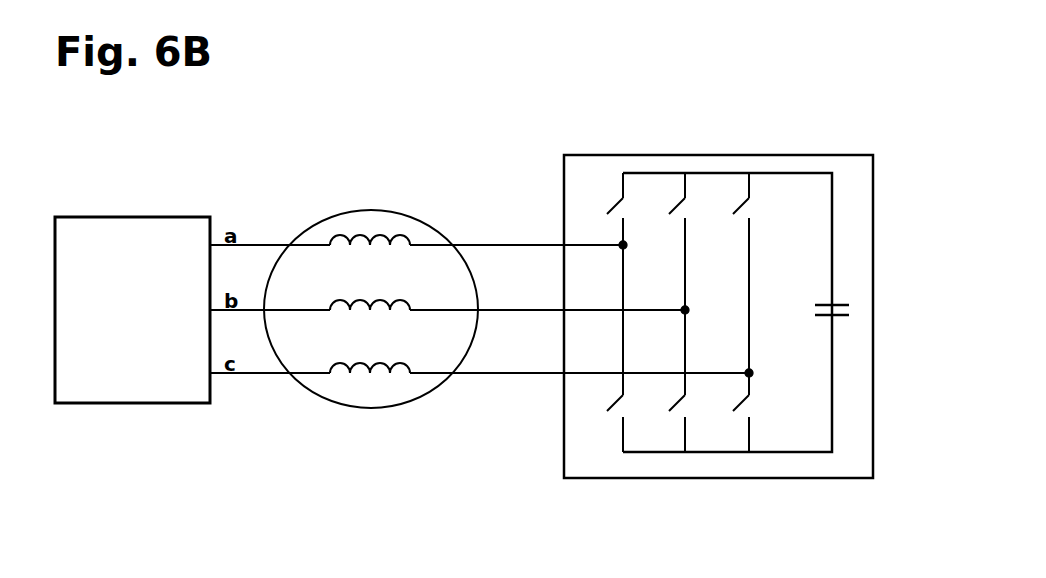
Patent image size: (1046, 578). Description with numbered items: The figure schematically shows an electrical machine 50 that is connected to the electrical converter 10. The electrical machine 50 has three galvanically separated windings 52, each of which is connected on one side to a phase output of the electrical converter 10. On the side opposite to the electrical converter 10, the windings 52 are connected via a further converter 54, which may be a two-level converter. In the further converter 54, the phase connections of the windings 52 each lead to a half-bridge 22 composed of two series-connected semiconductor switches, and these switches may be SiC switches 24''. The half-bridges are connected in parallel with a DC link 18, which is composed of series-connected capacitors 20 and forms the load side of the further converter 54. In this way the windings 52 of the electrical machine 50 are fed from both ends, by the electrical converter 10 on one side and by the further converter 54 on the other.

The electrical converter 10 is at (157, 403).
The electrical machine 50 is at (492, 180).
The windings 52 is at (384, 300).
The further converter 54 is at (843, 155).
The DC link 18 is at (837, 467).
The half-bridge 22 is at (608, 480).
The SiC switches 24'' is at (612, 309).
The capacitors 20 is at (838, 304).